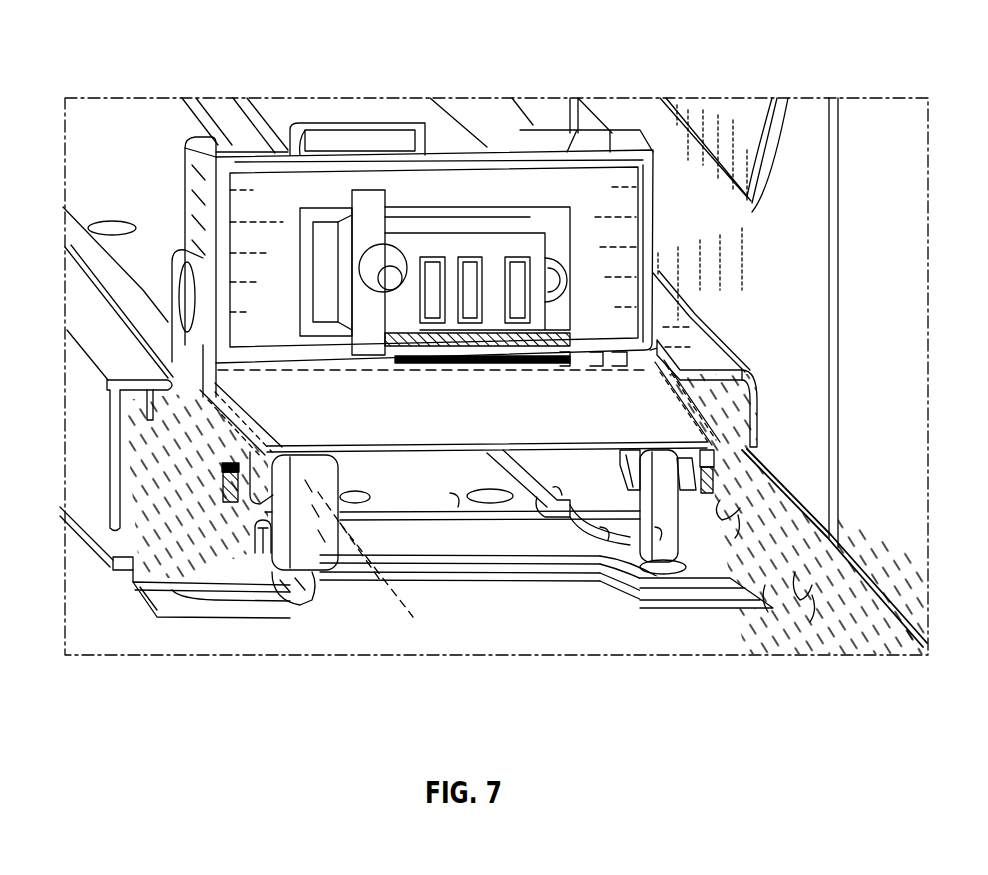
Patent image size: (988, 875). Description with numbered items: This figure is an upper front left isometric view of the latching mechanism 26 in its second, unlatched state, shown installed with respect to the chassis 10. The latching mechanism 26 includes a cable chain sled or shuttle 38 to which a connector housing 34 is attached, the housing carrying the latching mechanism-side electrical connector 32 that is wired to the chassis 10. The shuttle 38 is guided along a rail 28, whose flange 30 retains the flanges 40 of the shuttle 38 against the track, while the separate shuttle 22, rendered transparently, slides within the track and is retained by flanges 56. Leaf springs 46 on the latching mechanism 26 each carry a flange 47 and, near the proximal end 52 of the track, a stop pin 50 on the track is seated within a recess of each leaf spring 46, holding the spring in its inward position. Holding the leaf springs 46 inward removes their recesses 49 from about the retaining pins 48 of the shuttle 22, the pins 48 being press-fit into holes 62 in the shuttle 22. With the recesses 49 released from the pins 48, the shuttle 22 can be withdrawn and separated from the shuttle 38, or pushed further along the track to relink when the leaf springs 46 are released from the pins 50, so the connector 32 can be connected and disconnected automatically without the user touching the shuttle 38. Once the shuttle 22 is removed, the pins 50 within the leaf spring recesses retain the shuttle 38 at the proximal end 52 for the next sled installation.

The chassis 10 is at (842, 163).
The shuttle 22 is at (137, 418).
The latching mechanism 26 is at (119, 54).
The rail 28 is at (457, 501).
The flange 30 is at (549, 510).
The latching mechanism-side electrical connector 32 is at (510, 237).
The connector housing 34 is at (448, 187).
The cable chain sled or shuttle 38 is at (468, 428).
The flange 40 is at (618, 542).
The leaf spring 46 is at (619, 469).
The flange 47 is at (318, 542).
The retaining protrusion or pin 48 is at (240, 472).
The recess 49 is at (250, 508).
The protrusion or stop pin 50 is at (263, 538).
The proximal end 52 is at (205, 617).
The flange 56 is at (80, 314).
The hole 62 is at (738, 513).